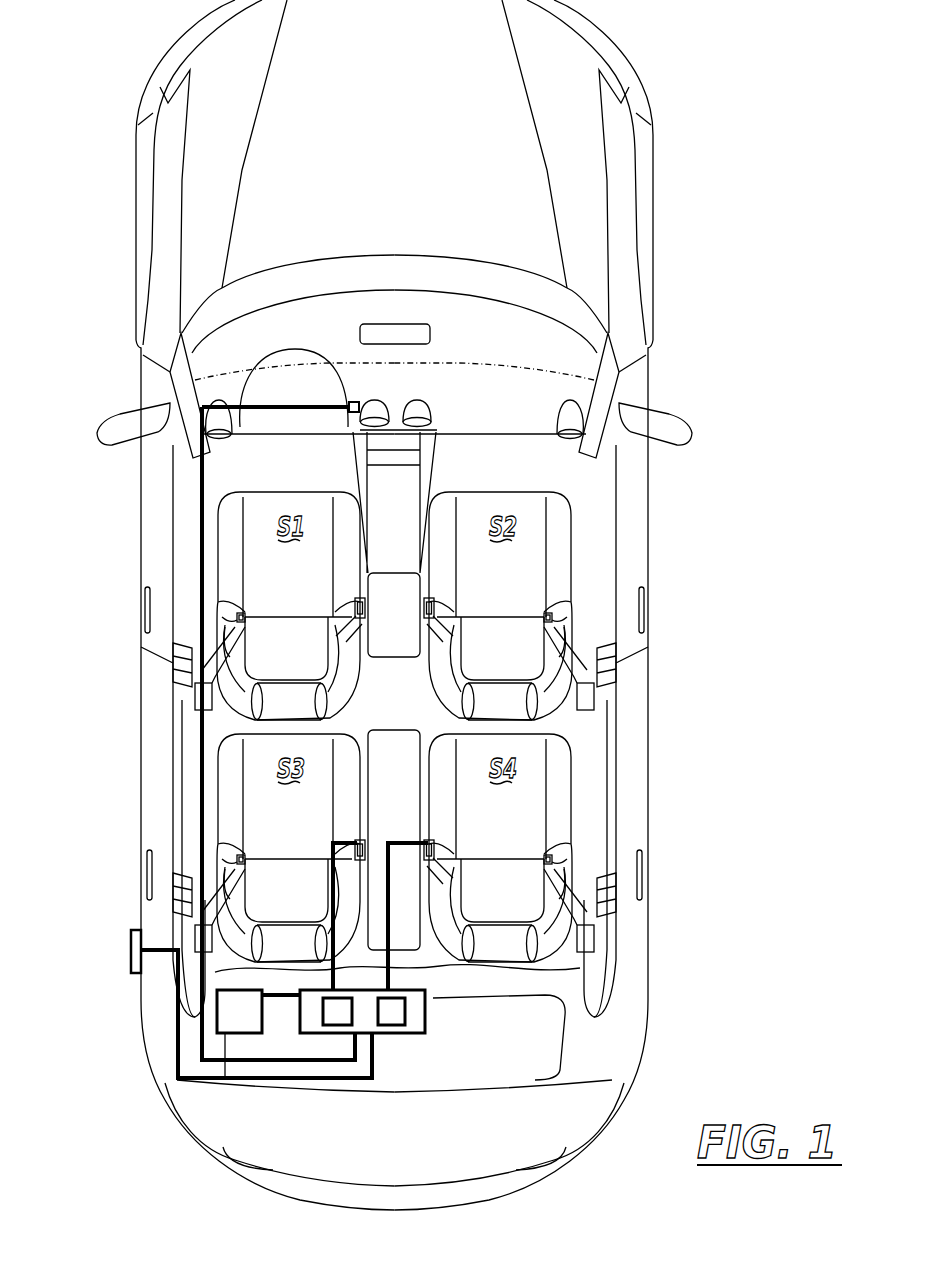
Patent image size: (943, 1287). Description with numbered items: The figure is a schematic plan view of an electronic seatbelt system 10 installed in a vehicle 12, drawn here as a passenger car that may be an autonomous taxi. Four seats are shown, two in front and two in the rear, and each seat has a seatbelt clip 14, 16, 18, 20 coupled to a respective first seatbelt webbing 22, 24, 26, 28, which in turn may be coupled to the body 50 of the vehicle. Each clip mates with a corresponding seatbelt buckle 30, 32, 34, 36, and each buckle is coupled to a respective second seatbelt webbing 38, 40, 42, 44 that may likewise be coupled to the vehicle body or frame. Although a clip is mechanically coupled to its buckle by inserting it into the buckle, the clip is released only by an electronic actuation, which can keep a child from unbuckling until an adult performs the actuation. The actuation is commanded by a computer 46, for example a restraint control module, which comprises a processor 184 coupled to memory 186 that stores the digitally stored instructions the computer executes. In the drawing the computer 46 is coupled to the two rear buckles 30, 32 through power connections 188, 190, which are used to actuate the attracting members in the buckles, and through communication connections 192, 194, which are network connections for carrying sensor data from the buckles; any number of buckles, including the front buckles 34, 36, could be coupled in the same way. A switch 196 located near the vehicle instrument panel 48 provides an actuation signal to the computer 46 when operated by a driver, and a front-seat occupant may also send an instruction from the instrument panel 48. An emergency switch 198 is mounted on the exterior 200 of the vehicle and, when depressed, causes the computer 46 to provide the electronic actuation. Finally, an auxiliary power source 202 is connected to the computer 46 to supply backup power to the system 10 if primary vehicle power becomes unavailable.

The electronic seatbelt system 10 is at (195, 520).
The vehicle 12 is at (672, 515).
The seatbelt clip 14 is at (267, 843).
The seatbelt clip 16 is at (536, 852).
The seatbelt clip 18 is at (536, 611).
The seatbelt clip 20 is at (246, 612).
The first seatbelt webbing 22 is at (246, 905).
The first seatbelt webbing 24 is at (558, 905).
The first seatbelt webbing 26 is at (558, 663).
The first seatbelt webbing 28 is at (240, 640).
The seatbelt buckle 30 is at (328, 820).
The seatbelt buckle 32 is at (445, 831).
The seatbelt buckle 34 is at (443, 598).
The seatbelt buckle 36 is at (352, 598).
The second seatbelt webbing 38 is at (375, 843).
The second seatbelt webbing 40 is at (445, 871).
The second seatbelt webbing 42 is at (445, 629).
The second seatbelt webbing 44 is at (352, 625).
The computer 46 is at (428, 1023).
The vehicle instrument panel 48 is at (473, 391).
The body 50 is at (157, 782).
The processor 184 is at (335, 1035).
The memory 186 is at (392, 1035).
The power connection 188 is at (331, 950).
The power connection 190 is at (392, 940).
The communication connection 192 is at (345, 978).
The communication connection 194 is at (400, 972).
The switch 196 is at (356, 402).
The emergency switch 198 is at (130, 948).
The exterior 200 is at (145, 1010).
The auxiliary power source 202 is at (258, 1011).